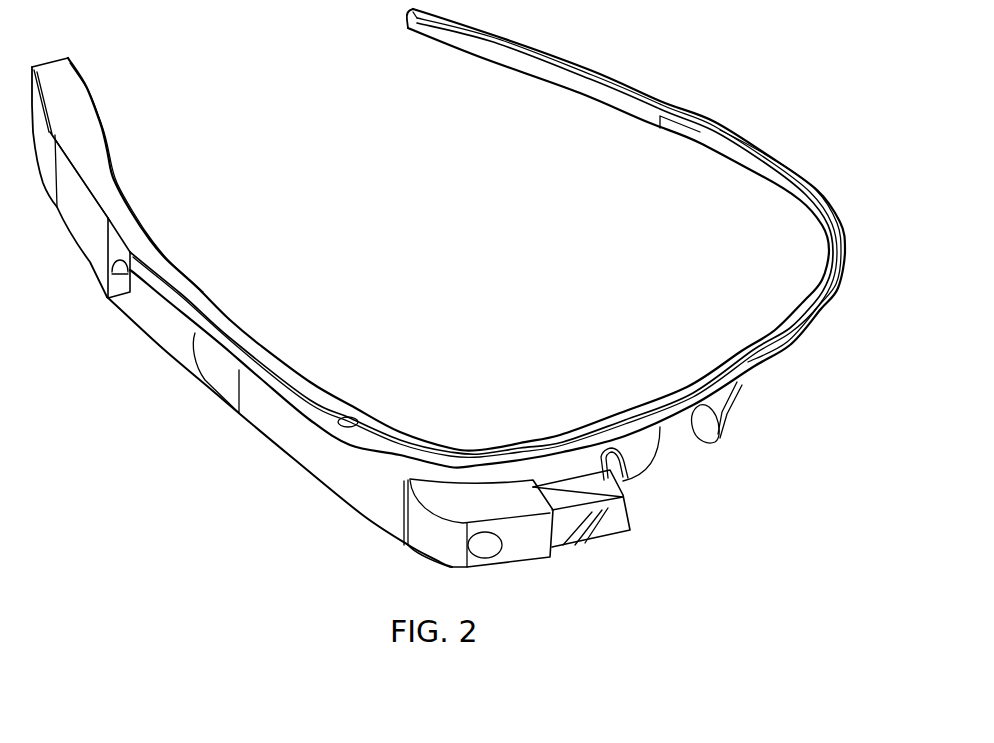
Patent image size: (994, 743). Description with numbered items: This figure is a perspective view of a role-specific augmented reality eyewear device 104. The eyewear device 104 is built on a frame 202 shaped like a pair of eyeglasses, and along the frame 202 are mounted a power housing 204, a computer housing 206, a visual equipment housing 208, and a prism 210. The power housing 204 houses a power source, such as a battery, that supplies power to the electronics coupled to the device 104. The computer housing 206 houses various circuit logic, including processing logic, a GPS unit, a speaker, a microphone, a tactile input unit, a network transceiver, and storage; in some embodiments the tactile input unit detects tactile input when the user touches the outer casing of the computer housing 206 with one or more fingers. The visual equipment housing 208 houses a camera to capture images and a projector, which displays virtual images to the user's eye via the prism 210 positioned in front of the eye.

The eyewear device 104 is at (744, 86).
The frame 202 is at (168, 297).
The power housing 204 is at (217, 381).
The computer housing 206 is at (370, 505).
The visual equipment housing 208 is at (527, 548).
The prism 210 is at (602, 530).